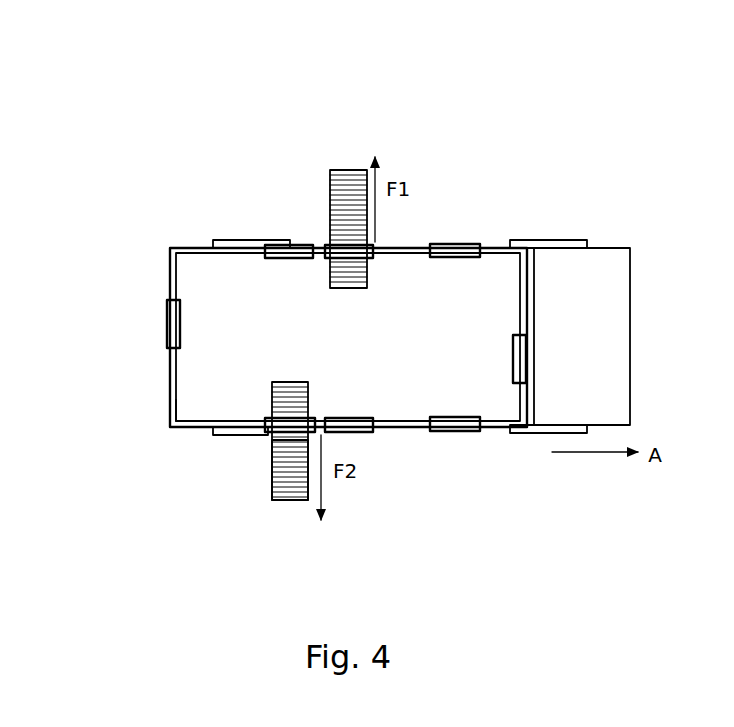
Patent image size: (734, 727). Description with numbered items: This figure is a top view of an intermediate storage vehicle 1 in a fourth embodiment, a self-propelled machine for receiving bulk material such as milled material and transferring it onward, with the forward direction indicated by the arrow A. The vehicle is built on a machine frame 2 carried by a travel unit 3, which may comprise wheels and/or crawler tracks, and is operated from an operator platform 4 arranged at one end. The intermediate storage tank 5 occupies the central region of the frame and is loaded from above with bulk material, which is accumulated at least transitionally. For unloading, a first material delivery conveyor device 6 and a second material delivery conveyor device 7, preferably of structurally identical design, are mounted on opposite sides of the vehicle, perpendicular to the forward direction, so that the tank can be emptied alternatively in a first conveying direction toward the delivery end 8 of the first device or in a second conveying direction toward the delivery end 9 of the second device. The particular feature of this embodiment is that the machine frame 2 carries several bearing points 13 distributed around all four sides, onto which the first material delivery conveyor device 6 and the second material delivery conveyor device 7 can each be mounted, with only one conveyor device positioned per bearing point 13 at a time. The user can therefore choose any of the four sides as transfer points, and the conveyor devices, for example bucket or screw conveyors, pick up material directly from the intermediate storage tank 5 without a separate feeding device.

The intermediate storage vehicle 1 is at (424, 140).
The machine frame 2 is at (501, 249).
The travel unit 3 is at (251, 243).
The operator platform 4 is at (608, 275).
The intermediate storage tank 5 is at (195, 405).
The first material delivery conveyor device 6 is at (333, 232).
The second material delivery conveyor device 7 is at (275, 438).
The delivery end of the first material delivery conveyor device 8 is at (352, 178).
The delivery end of the second material delivery conveyor device 9 is at (291, 495).
The bearing points 13 is at (467, 250).